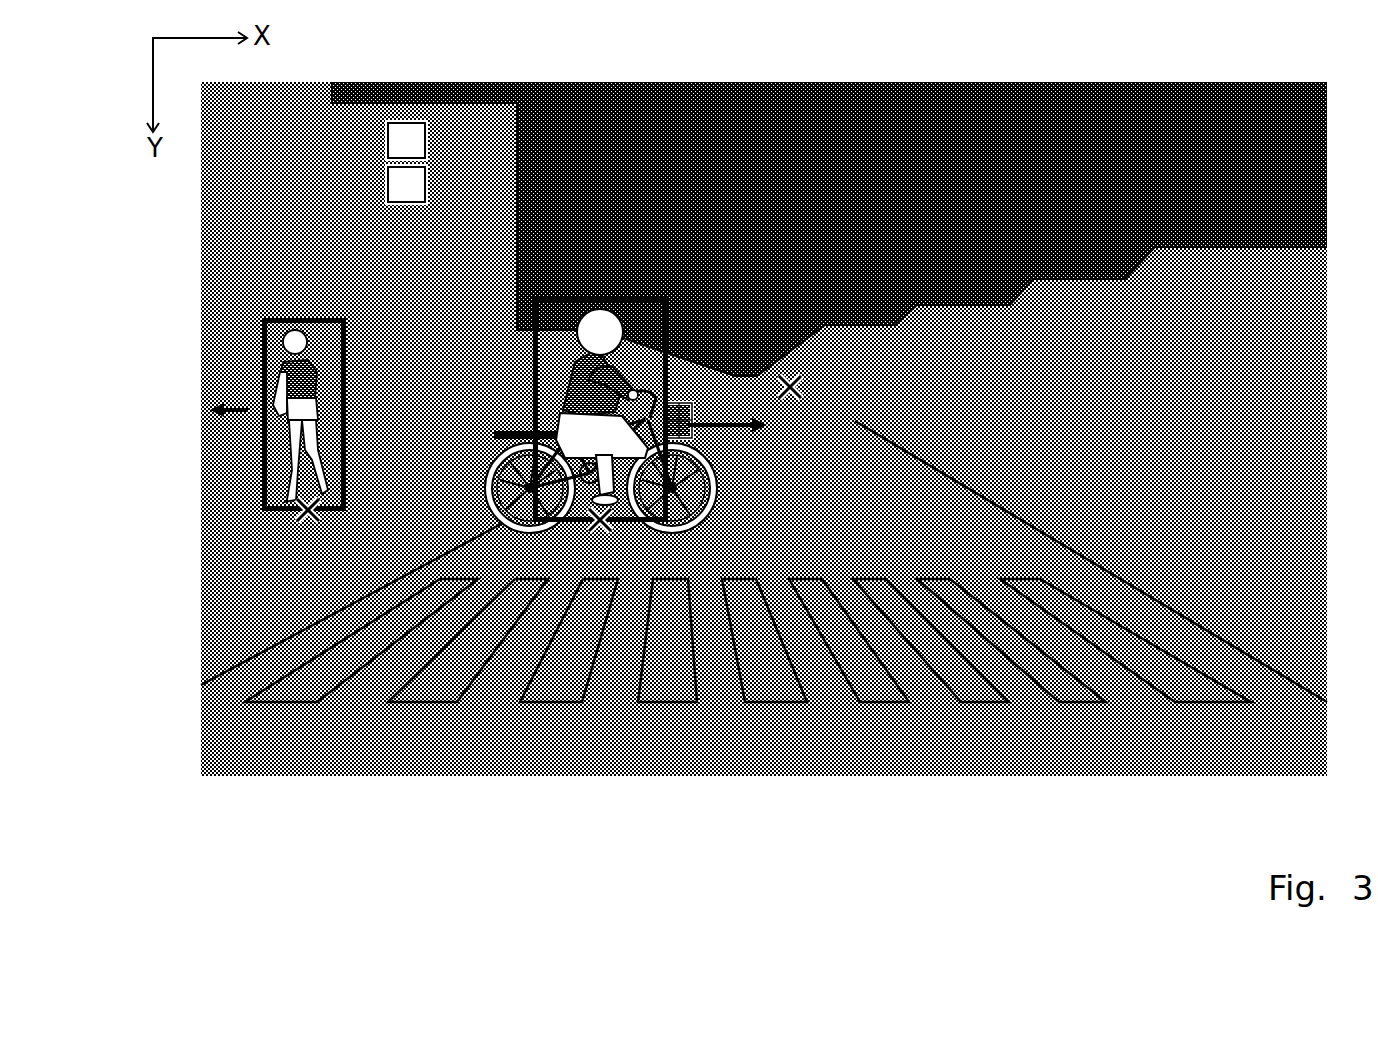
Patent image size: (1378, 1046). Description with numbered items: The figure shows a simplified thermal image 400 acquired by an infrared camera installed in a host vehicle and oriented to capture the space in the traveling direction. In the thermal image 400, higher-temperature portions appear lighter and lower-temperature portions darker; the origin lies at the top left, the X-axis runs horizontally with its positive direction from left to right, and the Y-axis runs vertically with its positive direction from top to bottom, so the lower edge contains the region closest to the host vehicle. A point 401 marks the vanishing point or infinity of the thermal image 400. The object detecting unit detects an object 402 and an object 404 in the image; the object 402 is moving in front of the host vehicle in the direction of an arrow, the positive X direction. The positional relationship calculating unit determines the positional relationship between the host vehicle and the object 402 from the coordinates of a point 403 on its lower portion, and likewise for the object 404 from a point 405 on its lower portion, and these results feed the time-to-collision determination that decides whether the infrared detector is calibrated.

The thermal image 400 is at (1310, 55).
The point 401 is at (790, 375).
The object 402 is at (600, 309).
The point 403 is at (600, 532).
The object 404 is at (277, 316).
The point 405 is at (300, 508).